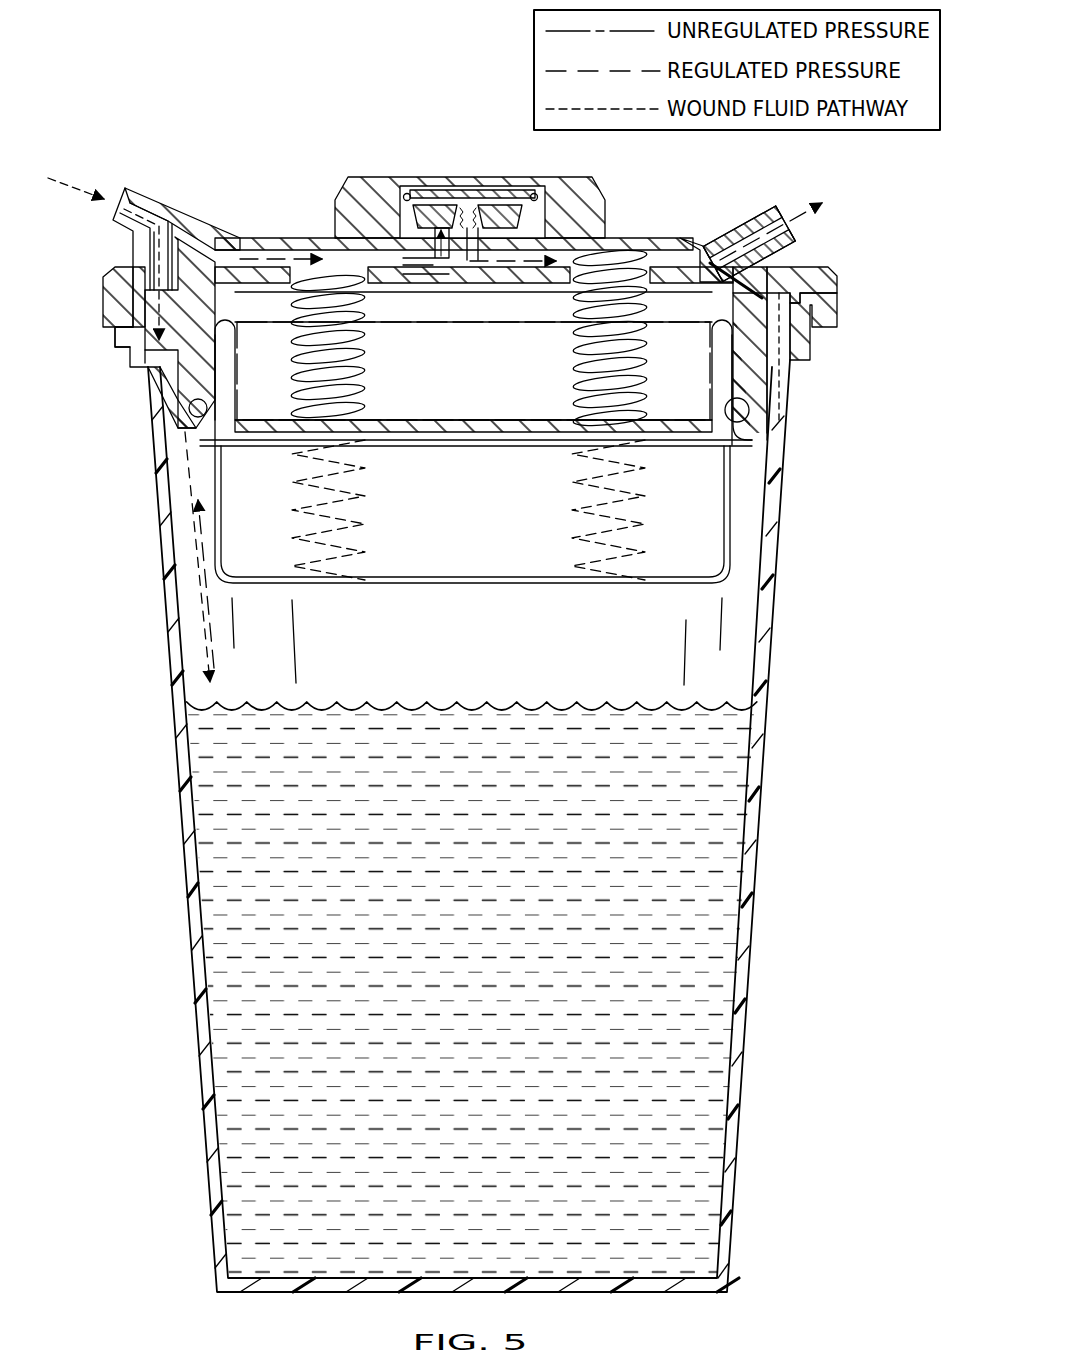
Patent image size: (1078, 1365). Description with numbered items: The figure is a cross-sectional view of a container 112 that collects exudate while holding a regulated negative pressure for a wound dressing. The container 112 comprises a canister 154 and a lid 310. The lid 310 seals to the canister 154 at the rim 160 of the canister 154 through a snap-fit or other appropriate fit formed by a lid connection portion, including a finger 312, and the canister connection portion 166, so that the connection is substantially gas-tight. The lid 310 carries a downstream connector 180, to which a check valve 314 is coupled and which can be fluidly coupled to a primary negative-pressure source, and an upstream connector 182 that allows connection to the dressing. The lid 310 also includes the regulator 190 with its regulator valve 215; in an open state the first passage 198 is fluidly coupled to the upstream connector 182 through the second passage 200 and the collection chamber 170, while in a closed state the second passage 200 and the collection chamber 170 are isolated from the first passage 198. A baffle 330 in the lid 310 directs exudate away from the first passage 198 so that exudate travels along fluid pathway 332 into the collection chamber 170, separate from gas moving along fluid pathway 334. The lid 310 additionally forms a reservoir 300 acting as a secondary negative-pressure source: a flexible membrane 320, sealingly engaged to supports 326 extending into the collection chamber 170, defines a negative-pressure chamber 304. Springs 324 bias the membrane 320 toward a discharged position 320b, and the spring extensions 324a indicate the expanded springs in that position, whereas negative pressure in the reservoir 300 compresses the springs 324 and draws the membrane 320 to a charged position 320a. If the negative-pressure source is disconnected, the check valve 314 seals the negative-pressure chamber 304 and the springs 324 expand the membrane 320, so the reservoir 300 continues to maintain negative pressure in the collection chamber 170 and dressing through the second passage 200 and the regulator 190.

The container 112 is at (236, 72).
The canister 154 is at (178, 993).
The rim 160 is at (120, 346).
The canister connection portion 166 is at (116, 330).
The collection chamber 170 is at (388, 659).
The downstream connector 180 is at (742, 218).
The upstream connector 182 is at (150, 185).
The regulator 190 is at (372, 166).
The first passage 198 is at (478, 268).
The second passage 200 is at (442, 240).
The regulator valve 215 is at (447, 190).
The reservoir 300 is at (528, 443).
The negative-pressure chamber 304 is at (487, 430).
The lid 310 is at (857, 305).
The finger 312 is at (110, 312).
The check valve 314 is at (800, 236).
The membrane 320 is at (688, 432).
The charged position 320a is at (425, 433).
The discharged position 320b is at (472, 585).
The springs 324 is at (378, 390).
The spring extension 324a is at (362, 502).
The supports 326 is at (700, 300).
The baffle 330 is at (152, 262).
The fluid pathway 332 is at (202, 637).
The fluid pathway 334 is at (253, 242).